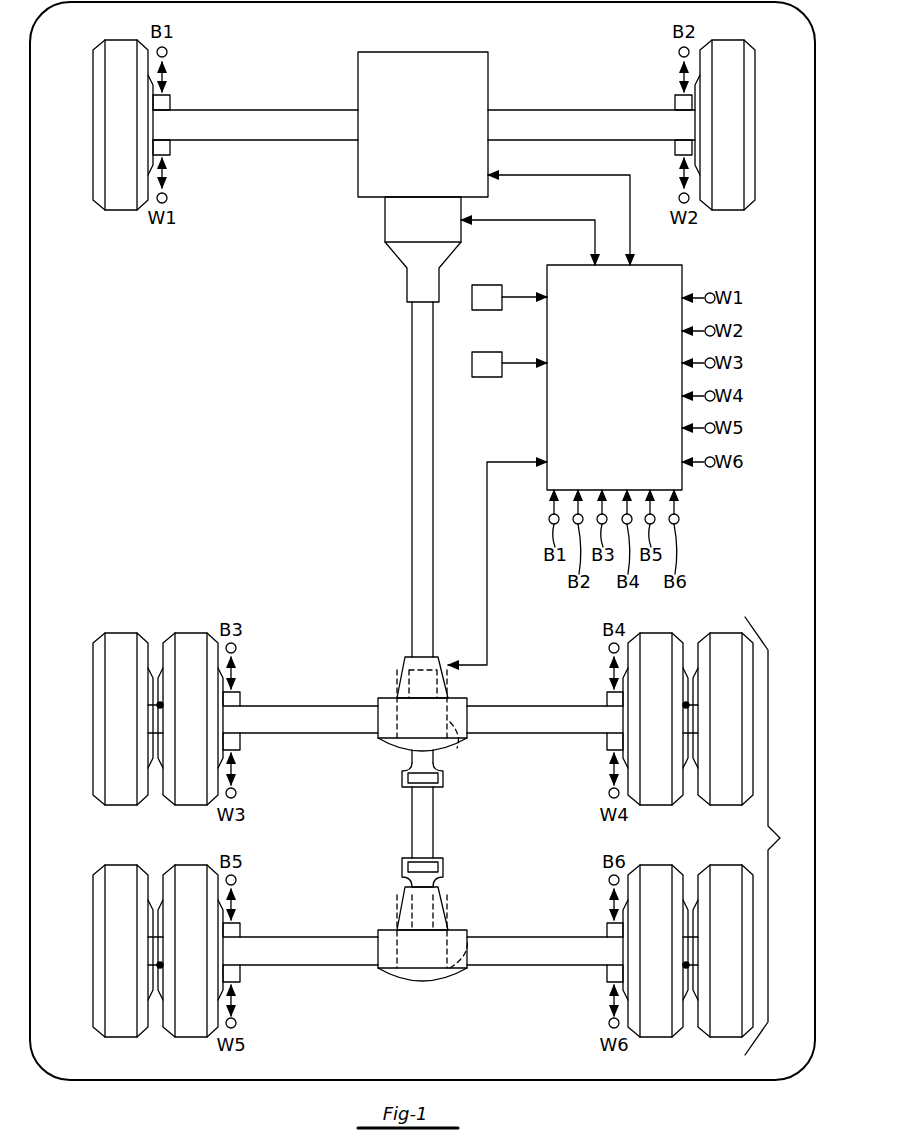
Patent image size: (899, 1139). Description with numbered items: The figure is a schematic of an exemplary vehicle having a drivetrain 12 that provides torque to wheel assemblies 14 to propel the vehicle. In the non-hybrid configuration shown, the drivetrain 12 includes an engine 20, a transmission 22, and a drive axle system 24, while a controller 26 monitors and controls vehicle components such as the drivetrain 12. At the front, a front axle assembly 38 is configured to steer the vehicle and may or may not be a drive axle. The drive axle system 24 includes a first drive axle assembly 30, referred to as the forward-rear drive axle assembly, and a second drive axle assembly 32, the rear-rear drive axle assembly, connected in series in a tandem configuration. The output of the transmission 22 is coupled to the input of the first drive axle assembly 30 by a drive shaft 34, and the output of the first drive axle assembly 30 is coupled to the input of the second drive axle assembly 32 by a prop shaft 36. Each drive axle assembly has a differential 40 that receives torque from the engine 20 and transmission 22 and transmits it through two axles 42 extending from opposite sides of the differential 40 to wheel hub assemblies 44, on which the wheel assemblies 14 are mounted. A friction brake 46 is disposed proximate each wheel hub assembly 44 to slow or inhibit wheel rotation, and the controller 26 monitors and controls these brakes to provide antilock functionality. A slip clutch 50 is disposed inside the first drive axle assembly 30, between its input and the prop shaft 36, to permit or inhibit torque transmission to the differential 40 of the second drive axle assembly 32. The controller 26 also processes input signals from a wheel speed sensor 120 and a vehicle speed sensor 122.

The drivetrain 12 is at (404, 334).
The wheel assembly 14 is at (101, 38).
The engine 20 is at (412, 136).
The transmission 22 is at (412, 232).
The drive axle system 24 is at (776, 836).
The controller 26 is at (597, 375).
The first drive axle assembly 30 is at (90, 705).
The second drive axle assembly 32 is at (90, 953).
The drive shaft 34 is at (418, 578).
The prop shaft 36 is at (425, 815).
The front axle assembly 38 is at (90, 118).
The differential 40 is at (451, 737).
The axle 42 is at (331, 731).
The wheel hub assembly 44 is at (160, 702).
The friction brake 46 is at (148, 90).
The slip clutch 50 is at (445, 691).
The wheel speed sensor 120 is at (509, 297).
The vehicle speed sensor 122 is at (509, 364).